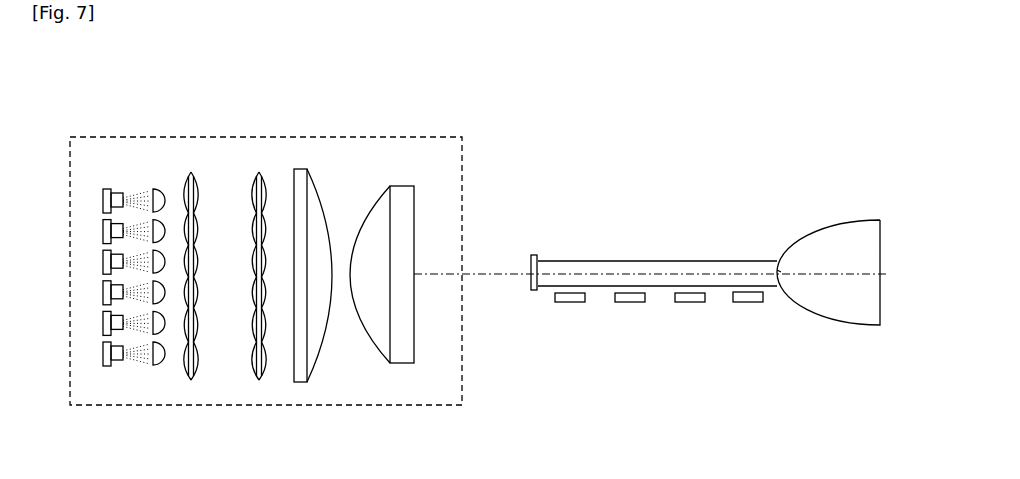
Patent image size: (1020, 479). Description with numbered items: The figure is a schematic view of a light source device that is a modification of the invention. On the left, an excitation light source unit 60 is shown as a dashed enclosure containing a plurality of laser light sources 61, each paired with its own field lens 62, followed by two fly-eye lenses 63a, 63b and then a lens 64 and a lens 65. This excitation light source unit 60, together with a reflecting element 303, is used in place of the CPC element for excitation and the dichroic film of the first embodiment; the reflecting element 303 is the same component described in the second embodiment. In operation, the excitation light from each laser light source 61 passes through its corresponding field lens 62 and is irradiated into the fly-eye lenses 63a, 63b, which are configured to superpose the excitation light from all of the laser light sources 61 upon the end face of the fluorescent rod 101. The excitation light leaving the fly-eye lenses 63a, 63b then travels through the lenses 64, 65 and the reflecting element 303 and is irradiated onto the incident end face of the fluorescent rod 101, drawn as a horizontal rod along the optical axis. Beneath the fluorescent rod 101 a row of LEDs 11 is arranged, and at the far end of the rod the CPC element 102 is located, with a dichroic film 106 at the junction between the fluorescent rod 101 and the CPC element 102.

The excitation light source unit 60 is at (258, 406).
The laser light sources 61 is at (108, 188).
The field lenses 62 is at (155, 187).
The fly-eye lens 63a is at (192, 173).
The fly-eye lens 63b is at (261, 173).
The lens 64 is at (300, 169).
The lens 65 is at (397, 186).
The reflecting element 303 is at (536, 255).
The fluorescent rod 101 is at (666, 261).
The LEDs 11 is at (571, 303).
The CPC element 102 is at (860, 221).
The dichroic film 106 is at (783, 271).